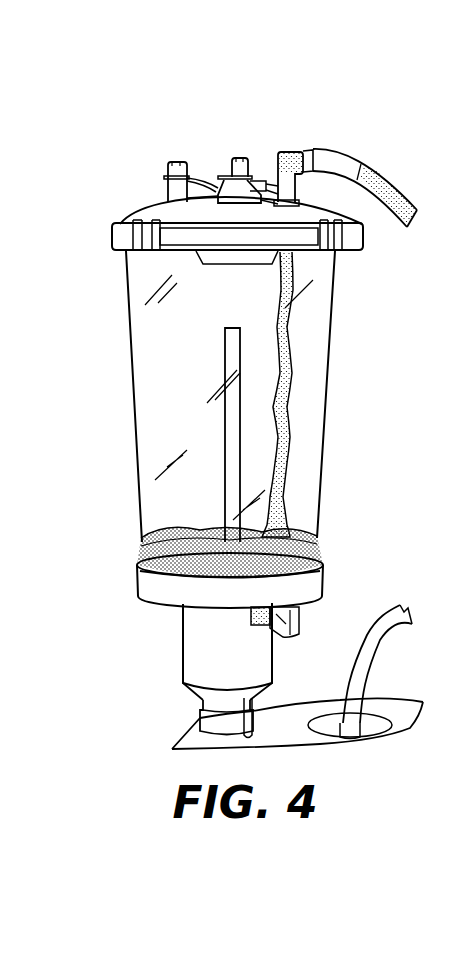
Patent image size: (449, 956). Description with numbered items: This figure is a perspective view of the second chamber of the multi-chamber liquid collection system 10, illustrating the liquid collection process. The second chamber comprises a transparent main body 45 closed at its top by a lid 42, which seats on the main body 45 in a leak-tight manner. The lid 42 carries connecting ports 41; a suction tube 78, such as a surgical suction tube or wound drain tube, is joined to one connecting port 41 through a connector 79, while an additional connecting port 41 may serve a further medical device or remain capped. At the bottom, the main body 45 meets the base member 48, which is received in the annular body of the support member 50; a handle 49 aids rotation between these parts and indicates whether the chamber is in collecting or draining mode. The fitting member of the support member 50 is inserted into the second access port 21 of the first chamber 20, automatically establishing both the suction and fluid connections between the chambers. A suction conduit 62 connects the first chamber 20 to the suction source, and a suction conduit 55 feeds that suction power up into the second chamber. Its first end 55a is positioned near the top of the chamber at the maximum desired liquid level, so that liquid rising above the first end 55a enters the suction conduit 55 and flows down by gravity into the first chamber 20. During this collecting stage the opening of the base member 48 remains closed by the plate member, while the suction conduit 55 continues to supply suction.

The multi-chamber liquid collection system 10 is at (314, 103).
The first chamber 20 is at (290, 716).
The second access port 21 is at (200, 716).
The connecting port 41 is at (257, 168).
The lid 42 is at (170, 212).
The main body 45 is at (146, 339).
The base member 48 is at (315, 576).
The handle 49 is at (300, 613).
The support member 50 is at (193, 650).
The suction conduit 55 is at (233, 412).
The first end 55a is at (234, 327).
The suction conduit 62 is at (376, 633).
The suction tube 78 is at (376, 170).
The connector 79 is at (283, 182).